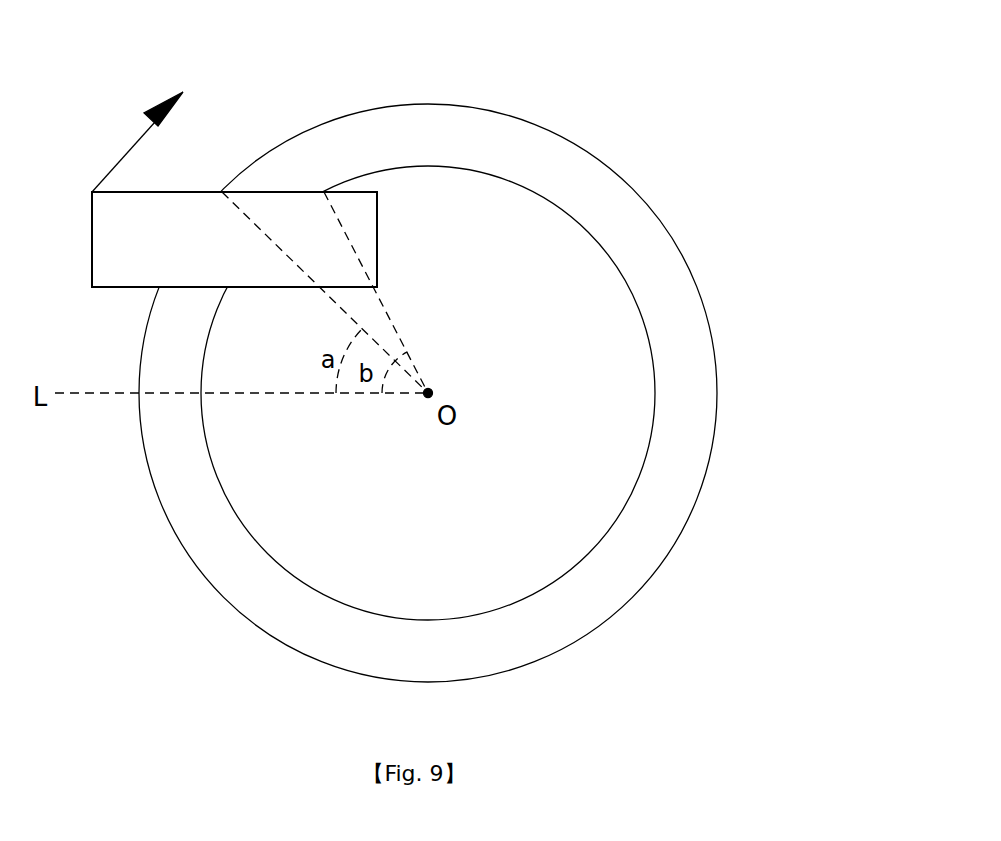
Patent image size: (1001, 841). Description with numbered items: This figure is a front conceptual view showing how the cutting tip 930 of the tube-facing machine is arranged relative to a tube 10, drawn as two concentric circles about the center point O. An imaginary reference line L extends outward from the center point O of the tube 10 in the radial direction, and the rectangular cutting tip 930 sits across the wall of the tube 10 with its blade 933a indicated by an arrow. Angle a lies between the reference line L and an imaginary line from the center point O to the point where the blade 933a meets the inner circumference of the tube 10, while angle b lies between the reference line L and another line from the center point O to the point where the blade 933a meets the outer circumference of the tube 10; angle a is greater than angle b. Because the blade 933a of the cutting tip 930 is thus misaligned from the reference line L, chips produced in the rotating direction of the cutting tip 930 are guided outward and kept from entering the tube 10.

The tube 10 is at (570, 167).
The cutting tip 930 is at (117, 250).
The blade 933a is at (167, 192).